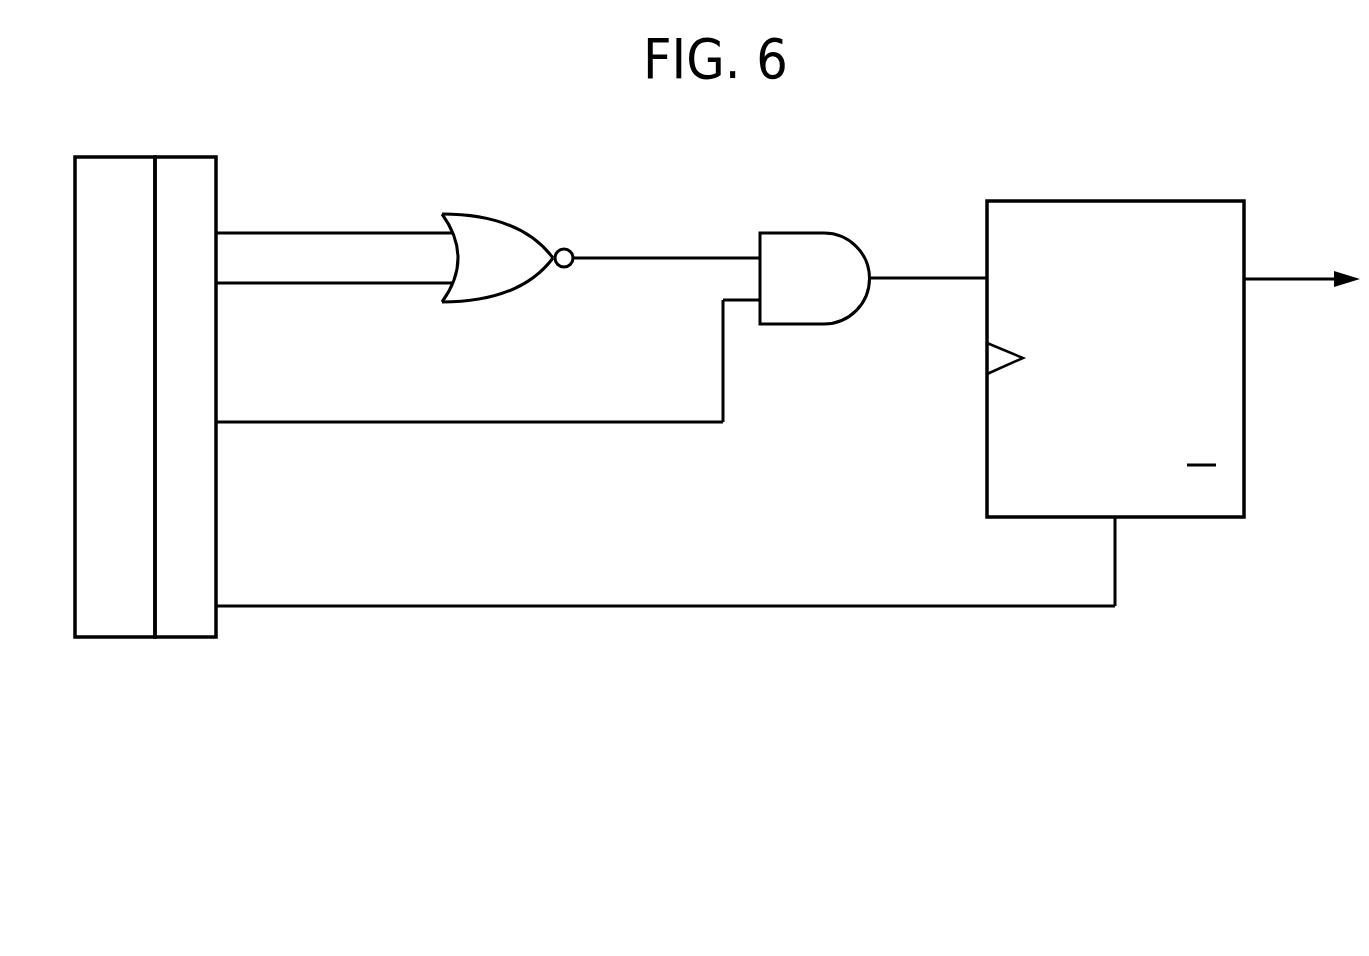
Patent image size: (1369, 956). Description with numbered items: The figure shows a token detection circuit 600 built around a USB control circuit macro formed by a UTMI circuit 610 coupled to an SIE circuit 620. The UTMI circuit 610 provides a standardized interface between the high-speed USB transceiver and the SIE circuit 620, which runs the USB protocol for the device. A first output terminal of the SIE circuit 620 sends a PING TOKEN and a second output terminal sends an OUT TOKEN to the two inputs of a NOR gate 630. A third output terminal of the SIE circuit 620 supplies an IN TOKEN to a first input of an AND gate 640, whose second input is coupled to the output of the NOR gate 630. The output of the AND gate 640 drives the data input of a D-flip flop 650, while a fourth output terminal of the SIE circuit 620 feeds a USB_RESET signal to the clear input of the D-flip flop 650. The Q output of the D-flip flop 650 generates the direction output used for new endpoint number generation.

The token detection circuit 600 is at (412, 80).
The UTMI circuit 610 is at (100, 157).
The SIE circuit 620 is at (197, 638).
The NOR gate 630 is at (505, 300).
The AND gate 640 is at (825, 325).
The D-flip flop 650 is at (1000, 518).